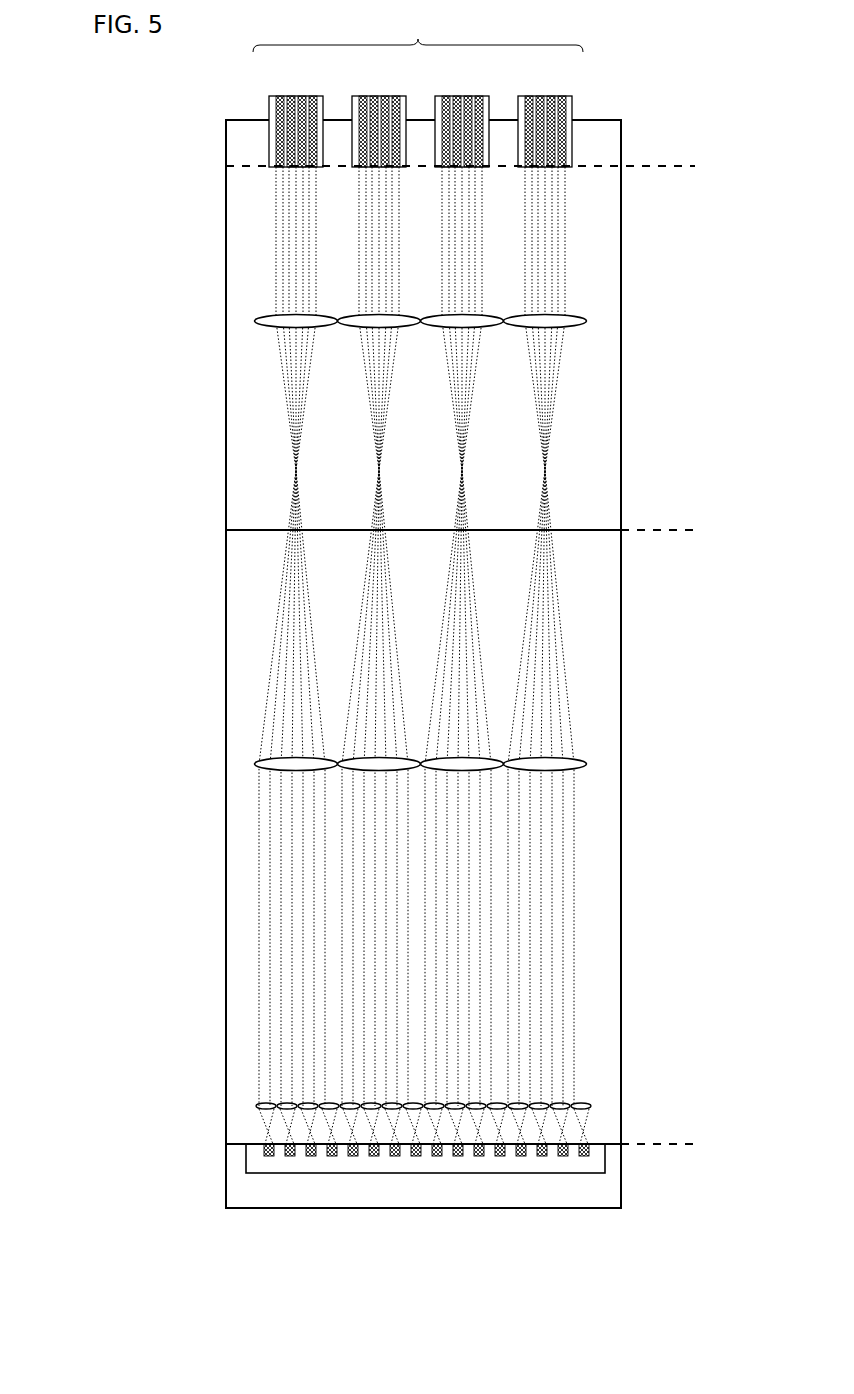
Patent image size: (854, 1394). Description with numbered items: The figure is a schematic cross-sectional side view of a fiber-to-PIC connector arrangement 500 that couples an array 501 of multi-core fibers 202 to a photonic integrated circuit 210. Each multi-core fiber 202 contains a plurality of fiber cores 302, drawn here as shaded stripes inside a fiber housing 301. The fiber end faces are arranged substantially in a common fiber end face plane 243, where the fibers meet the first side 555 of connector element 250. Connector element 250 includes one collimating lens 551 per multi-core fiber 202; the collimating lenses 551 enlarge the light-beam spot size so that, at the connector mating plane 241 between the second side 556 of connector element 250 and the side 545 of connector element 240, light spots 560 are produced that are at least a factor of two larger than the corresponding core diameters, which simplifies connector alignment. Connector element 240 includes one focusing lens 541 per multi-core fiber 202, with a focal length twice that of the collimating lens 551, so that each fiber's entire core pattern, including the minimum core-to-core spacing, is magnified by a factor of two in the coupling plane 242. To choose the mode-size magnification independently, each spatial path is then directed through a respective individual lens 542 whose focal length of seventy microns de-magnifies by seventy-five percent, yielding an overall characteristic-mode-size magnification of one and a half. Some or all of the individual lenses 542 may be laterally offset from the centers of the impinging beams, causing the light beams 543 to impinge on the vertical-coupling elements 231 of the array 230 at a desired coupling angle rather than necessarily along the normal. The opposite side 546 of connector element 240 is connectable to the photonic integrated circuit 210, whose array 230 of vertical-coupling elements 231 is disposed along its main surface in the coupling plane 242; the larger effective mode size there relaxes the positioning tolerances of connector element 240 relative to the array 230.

The fiber-to-PIC connector arrangement 500 is at (103, 86).
The array of multi-core fibers 501 is at (418, 32).
The multi-core fiber 202 is at (269, 96).
The fiber core 302 is at (569, 96).
The light source housing 301 is at (573, 105).
The first side of first connector part 555 is at (242, 122).
The fiber end face plane 243 is at (688, 164).
The connector element 250 is at (240, 392).
The collimating lens 551 is at (582, 322).
The light spots 560 is at (374, 524).
The second side of first connector part 556 is at (243, 530).
The connector mating plane 241 is at (687, 530).
The one side of second connector part 545 is at (257, 537).
The connector element 240 is at (240, 665).
The focusing lens 541 is at (585, 764).
The individual lens 542 is at (585, 1103).
The light beams 543 is at (590, 1121).
The opposite side of second connector part 546 is at (238, 1143).
The coupling plane 242 is at (690, 1143).
The photonic integrated circuit 210 is at (240, 1187).
The array of vertical coupling elements 230 is at (598, 1163).
The vertical-coupling element 231 is at (316, 1156).